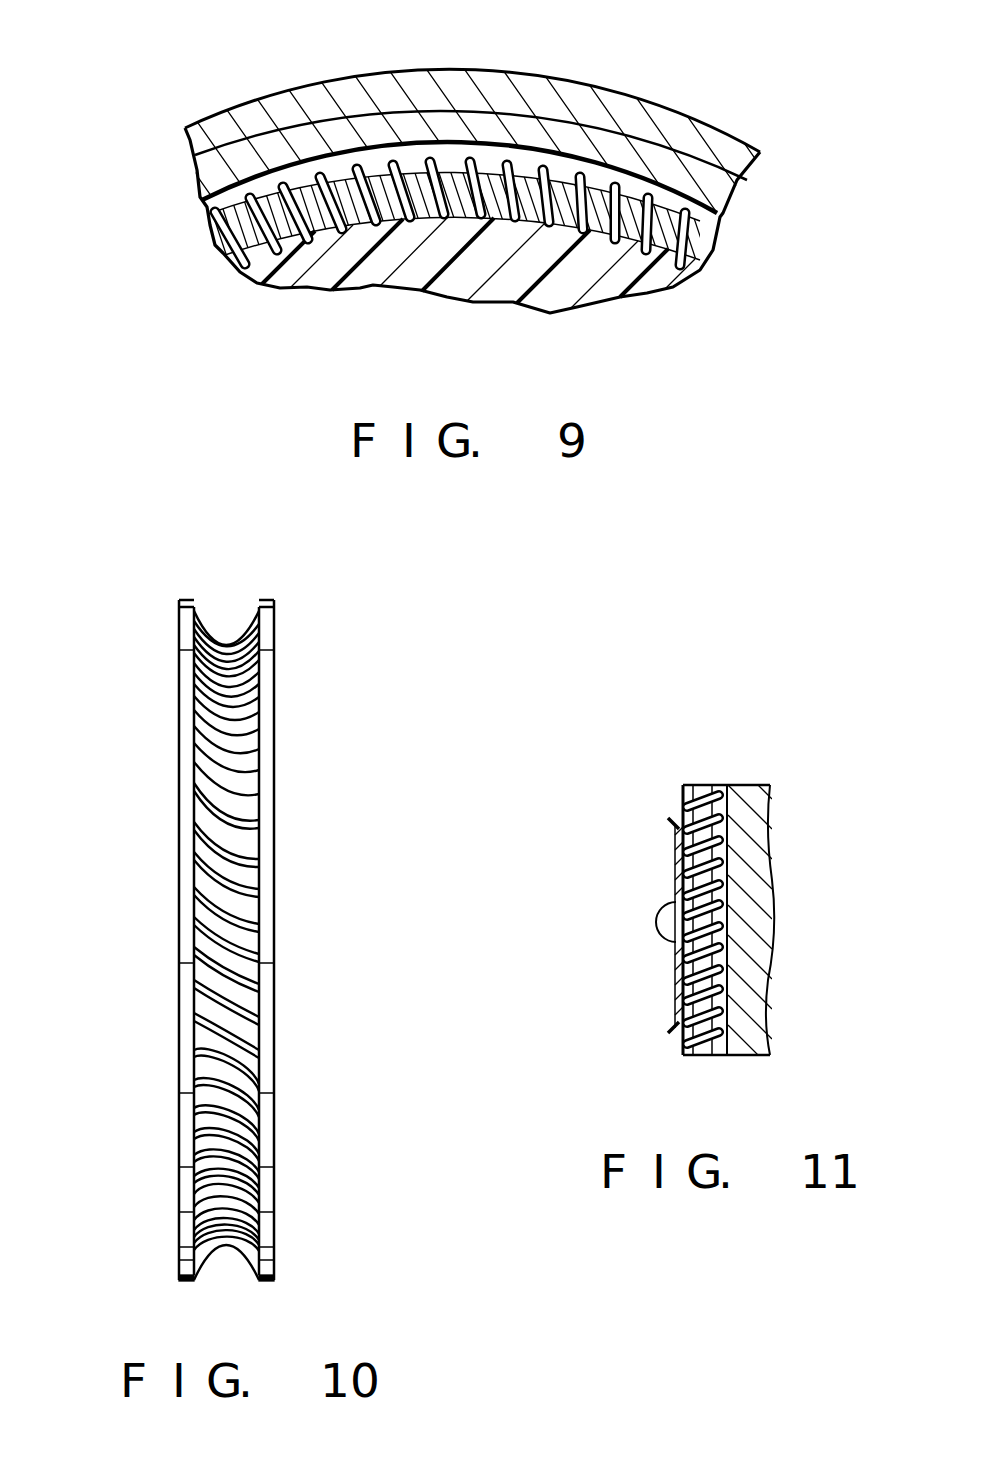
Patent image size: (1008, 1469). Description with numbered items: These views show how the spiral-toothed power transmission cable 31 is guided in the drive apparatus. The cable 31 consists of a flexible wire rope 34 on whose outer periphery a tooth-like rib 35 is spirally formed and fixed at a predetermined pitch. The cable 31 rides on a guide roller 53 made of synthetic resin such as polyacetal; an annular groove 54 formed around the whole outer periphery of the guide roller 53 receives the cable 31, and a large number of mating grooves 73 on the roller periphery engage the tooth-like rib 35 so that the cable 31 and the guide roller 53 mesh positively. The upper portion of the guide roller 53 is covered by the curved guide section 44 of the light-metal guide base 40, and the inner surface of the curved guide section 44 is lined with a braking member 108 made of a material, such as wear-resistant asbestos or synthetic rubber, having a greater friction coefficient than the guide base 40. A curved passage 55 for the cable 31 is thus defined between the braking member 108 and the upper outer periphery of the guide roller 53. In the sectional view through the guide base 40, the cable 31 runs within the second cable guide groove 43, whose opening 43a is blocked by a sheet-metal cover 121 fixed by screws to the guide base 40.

In FIG. 9, the curved guide section 44 is at (300, 110).
In FIG. 9, the curved passage 55 is at (413, 160).
In FIG. 9, the braking member 108 is at (537, 123).
In FIG. 9, the tooth-like rib 35 is at (577, 177).
In FIG. 9, the wire rope 34 is at (598, 192).
In FIG. 9, the power transmission cable 31 is at (660, 207).
In FIG. 11, the power transmission cable 31 is at (688, 1038).
In FIG. 9, the mating grooves 73 is at (350, 233).
In FIG. 10, the mating grooves 73 is at (223, 738).
In FIG. 9, the guide roller 53 is at (467, 280).
In FIG. 10, the guide roller 53 is at (276, 793).
In FIG. 10, the annular groove 54 is at (227, 617).
In FIG. 11, the opening of the second cable guide groove 43a is at (683, 800).
In FIG. 11, the second cable guide groove 43 is at (728, 873).
In FIG. 11, the guide base 40 is at (752, 957).
In FIG. 11, the cover 121 is at (678, 985).